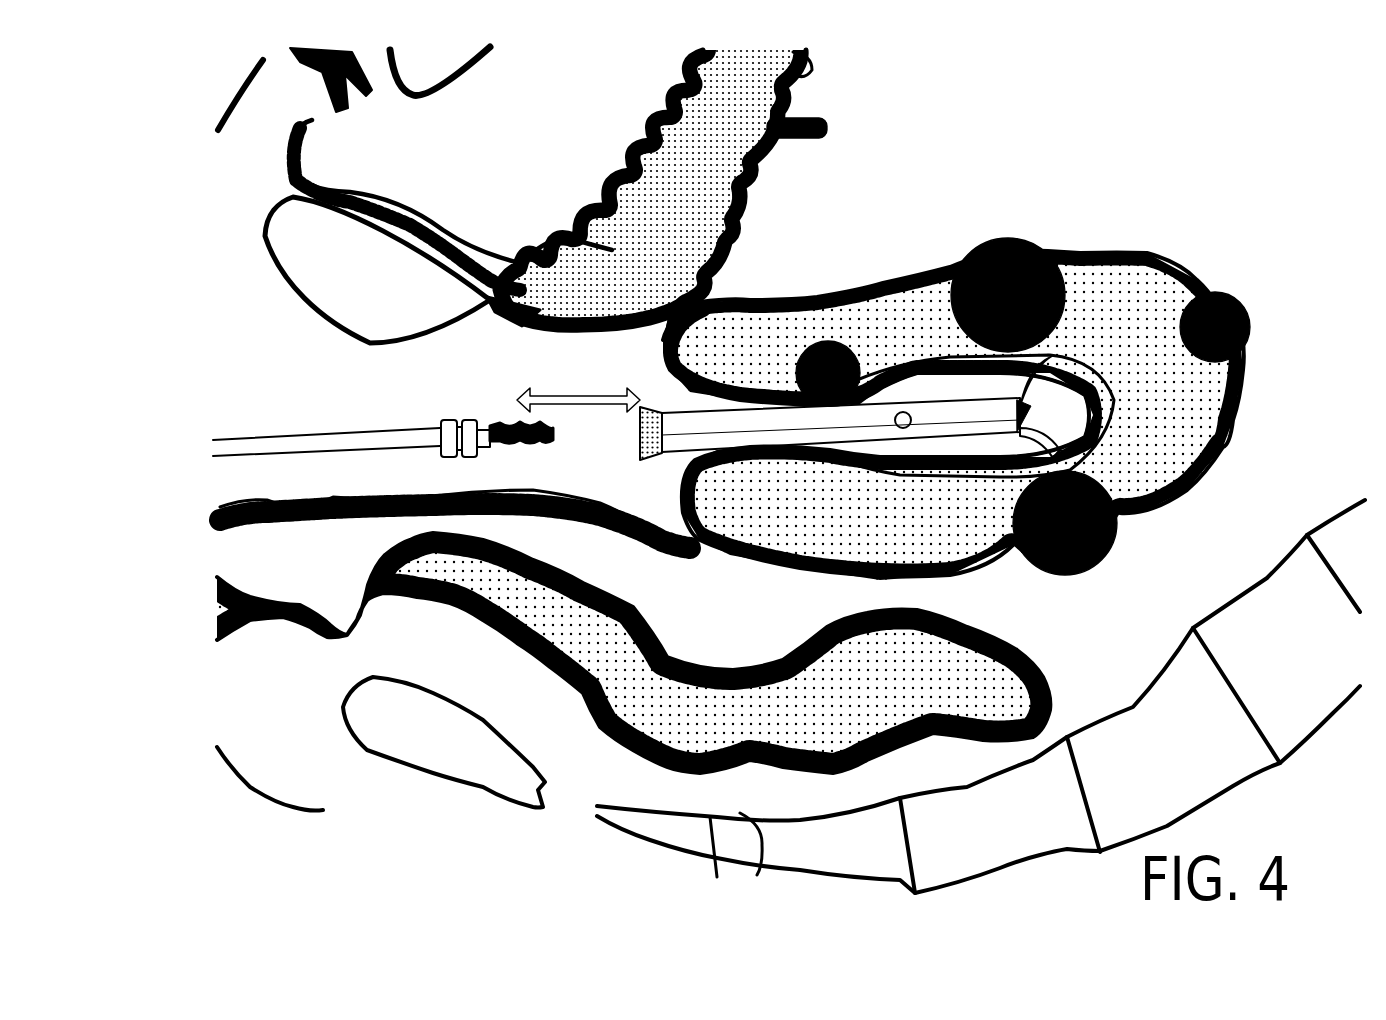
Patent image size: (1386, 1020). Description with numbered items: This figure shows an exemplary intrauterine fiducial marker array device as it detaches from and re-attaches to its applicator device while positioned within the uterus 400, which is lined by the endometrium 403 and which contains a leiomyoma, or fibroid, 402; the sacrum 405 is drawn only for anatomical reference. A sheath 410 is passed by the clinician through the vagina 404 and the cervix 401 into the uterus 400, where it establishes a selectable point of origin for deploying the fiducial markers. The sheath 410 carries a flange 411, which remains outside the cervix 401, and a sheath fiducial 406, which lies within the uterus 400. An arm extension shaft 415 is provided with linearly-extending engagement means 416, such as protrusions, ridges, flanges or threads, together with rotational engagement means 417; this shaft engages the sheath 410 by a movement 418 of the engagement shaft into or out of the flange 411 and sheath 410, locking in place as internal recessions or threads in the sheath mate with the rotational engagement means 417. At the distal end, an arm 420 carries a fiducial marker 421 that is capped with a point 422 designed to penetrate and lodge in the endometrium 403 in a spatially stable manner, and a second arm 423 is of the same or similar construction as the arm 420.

The uterus 400 is at (1117, 250).
The cervix 401 is at (717, 347).
The leiomyoma (fibroid) 402 is at (1005, 240).
The endometrium 403 is at (1092, 373).
The vagina 404 is at (402, 288).
The sacrum 405 is at (981, 696).
The sheath fiducial 406 is at (908, 428).
The sheath 410 is at (767, 427).
The flange 411 is at (650, 458).
The arm extension shaft 415 is at (272, 440).
The linearly-extending engagement means 416 is at (438, 422).
The rotational engagement means 417 is at (520, 440).
The movement 418 is at (578, 387).
The arm 420 is at (1057, 430).
The fiducial marker 421 is at (1063, 440).
The point 422 is at (1067, 453).
The arm 423 is at (1057, 353).